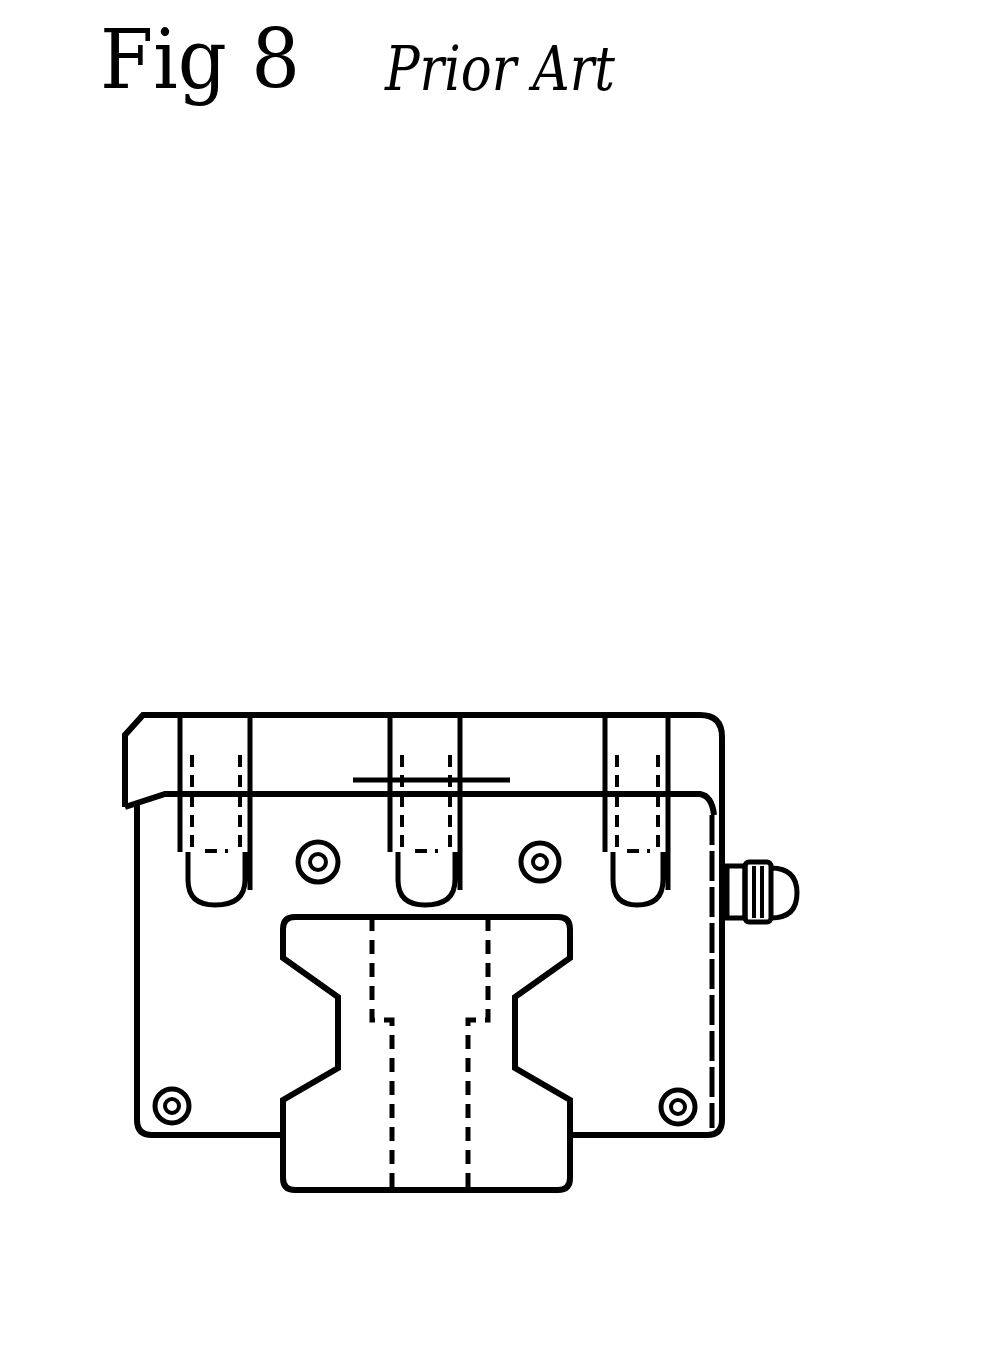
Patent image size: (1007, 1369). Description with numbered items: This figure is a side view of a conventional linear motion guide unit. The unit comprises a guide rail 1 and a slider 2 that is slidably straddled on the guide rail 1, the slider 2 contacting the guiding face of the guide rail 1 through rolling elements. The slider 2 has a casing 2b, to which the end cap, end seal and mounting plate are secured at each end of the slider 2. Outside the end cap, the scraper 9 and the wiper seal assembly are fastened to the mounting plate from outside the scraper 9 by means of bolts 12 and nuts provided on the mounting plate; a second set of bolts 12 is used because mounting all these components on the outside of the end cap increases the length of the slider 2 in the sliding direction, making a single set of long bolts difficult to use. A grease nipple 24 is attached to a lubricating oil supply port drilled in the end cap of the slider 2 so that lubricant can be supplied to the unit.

The guide rail 1 is at (505, 1168).
The slider 2 is at (120, 877).
The casing 2b is at (705, 762).
The scraper 9 is at (690, 1057).
The bolts 12 is at (318, 840).
The grease nipple 24 is at (782, 872).